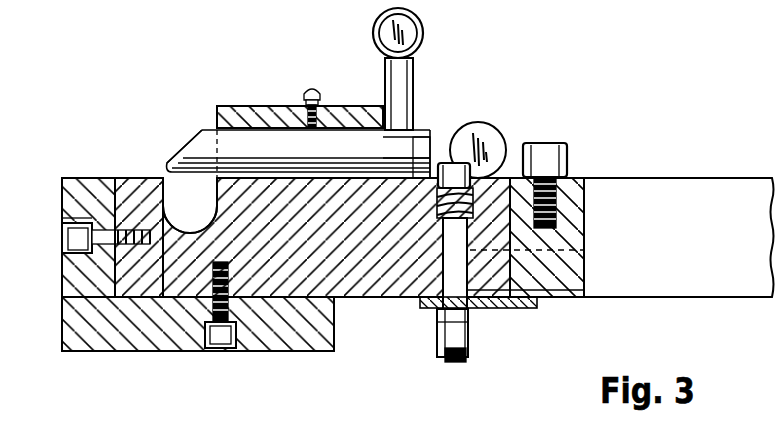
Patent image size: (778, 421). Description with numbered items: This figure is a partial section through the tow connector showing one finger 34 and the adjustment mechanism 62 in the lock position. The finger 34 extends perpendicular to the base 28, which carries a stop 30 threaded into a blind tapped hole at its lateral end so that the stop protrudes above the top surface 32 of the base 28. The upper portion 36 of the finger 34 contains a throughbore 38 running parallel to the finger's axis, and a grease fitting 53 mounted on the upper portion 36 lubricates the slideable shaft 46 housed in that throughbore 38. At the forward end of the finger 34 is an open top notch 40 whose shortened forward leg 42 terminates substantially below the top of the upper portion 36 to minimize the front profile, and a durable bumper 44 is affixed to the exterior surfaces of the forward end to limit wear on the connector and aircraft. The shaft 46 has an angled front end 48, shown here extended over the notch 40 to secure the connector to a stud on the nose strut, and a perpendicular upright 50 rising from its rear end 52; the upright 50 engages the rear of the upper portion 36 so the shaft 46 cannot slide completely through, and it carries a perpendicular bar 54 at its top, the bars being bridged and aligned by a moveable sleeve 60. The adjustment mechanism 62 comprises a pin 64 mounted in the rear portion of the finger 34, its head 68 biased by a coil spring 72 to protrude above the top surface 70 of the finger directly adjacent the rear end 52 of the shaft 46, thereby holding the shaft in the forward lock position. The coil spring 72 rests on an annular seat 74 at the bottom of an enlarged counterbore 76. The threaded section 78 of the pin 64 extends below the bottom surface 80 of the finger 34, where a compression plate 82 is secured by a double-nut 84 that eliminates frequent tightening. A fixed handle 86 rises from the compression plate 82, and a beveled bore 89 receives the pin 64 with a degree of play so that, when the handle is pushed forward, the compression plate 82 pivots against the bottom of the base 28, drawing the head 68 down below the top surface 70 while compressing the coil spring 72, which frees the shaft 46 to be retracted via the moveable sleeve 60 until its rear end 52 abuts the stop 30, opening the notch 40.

The base 28 is at (578, 236).
The stop 30 is at (553, 145).
The top surface 32 is at (580, 180).
The finger 34 is at (290, 305).
The upper portion 36 is at (343, 118).
The throughbore 38 is at (238, 135).
The open top notch 40 is at (200, 226).
The forward leg 42 is at (131, 178).
The bumper 44 is at (92, 180).
The slideable shaft 46 is at (268, 128).
The angled front end 48 is at (184, 142).
The upright 50 is at (415, 87).
The rear end 52 is at (430, 136).
The grease fitting 53 is at (311, 86).
The bar 54 is at (411, 42).
The moveable sleeve 60 is at (424, 25).
The adjustment mechanism 62 is at (495, 118).
The pin 64 is at (575, 285).
The head 68 is at (437, 160).
The top surface 70 is at (472, 165).
The coil spring 72 is at (584, 203).
The annular seat 74 is at (374, 296).
The enlarged counterbore 76 is at (590, 188).
The threaded section 78 is at (470, 352).
The bottom surface 80 is at (345, 300).
The compression plate 82 is at (540, 305).
The double-nut 84 is at (452, 322).
The fixed handle 86 is at (590, 257).
The beveled bore 89 is at (505, 308).